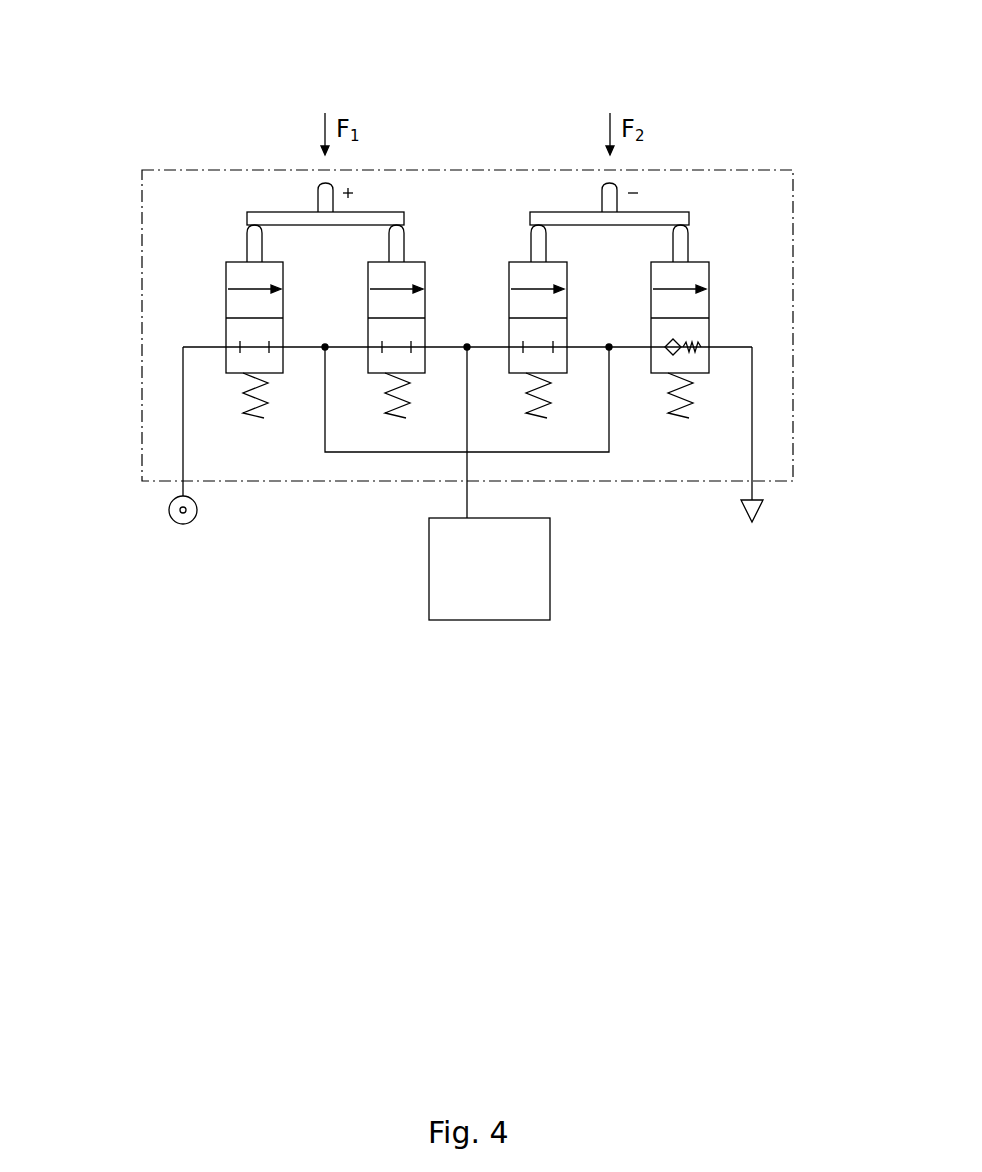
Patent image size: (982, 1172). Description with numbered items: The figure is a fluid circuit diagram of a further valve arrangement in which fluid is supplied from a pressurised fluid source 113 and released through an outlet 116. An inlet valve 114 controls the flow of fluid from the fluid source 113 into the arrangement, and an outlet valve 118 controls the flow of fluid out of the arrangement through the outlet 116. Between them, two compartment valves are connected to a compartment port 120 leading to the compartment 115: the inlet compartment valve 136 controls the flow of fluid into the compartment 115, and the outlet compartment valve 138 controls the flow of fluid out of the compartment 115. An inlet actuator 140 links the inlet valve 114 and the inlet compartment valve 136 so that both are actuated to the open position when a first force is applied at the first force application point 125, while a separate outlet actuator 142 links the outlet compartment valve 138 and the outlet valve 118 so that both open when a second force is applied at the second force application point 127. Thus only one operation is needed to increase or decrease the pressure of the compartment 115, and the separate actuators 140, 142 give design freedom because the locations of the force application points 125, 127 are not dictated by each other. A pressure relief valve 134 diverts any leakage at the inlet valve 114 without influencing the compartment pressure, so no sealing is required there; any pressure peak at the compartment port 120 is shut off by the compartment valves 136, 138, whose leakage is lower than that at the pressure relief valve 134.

The pressurised fluid source 113 is at (163, 508).
The inlet valve 114 is at (226, 300).
The compartment 115 is at (489, 569).
The outlet 116 is at (770, 455).
The outlet valve 118 is at (708, 300).
The compartment port 120 is at (464, 487).
The first force application point 125 is at (323, 190).
The second force application point 127 is at (608, 187).
The pressure relief valve 134 is at (698, 362).
The inlet compartment valve 136 is at (368, 330).
The outlet compartment valve 138 is at (568, 332).
The inlet actuator 140 is at (258, 213).
The outlet actuator 142 is at (668, 213).